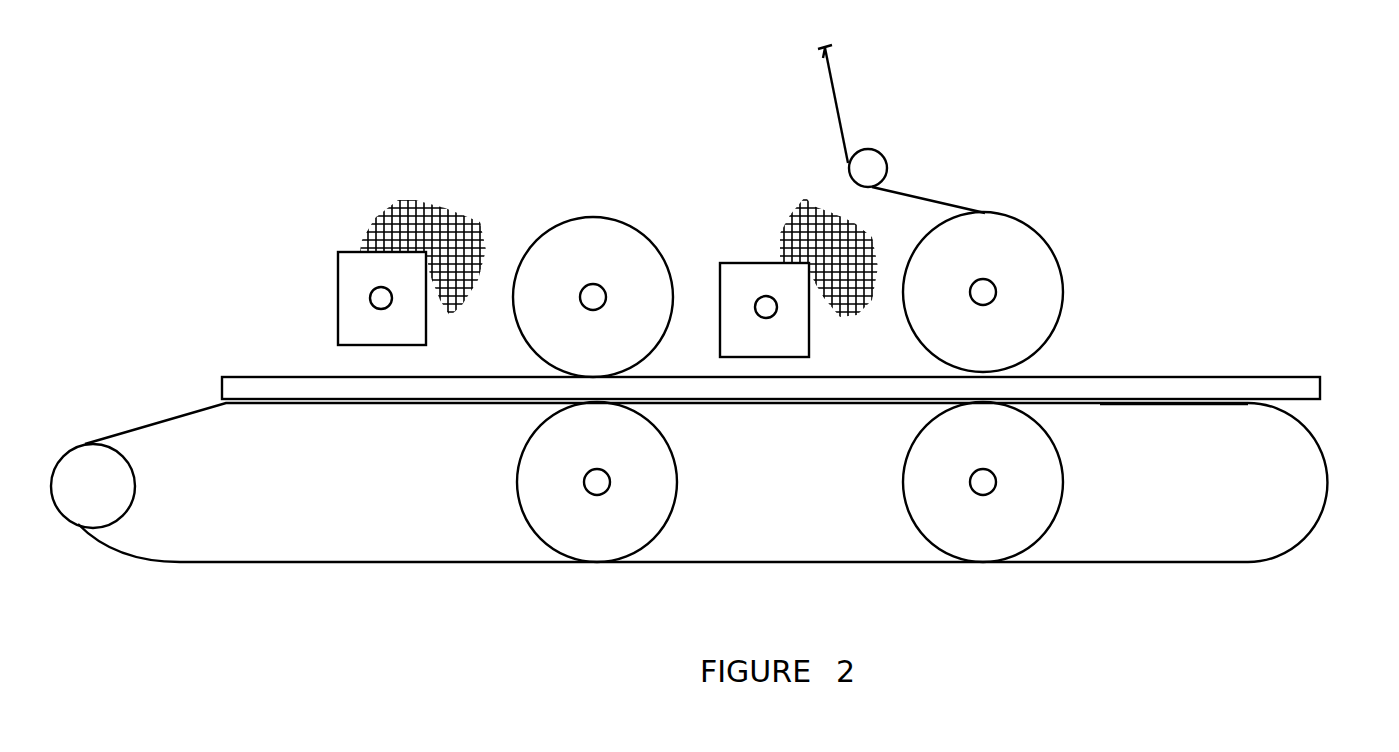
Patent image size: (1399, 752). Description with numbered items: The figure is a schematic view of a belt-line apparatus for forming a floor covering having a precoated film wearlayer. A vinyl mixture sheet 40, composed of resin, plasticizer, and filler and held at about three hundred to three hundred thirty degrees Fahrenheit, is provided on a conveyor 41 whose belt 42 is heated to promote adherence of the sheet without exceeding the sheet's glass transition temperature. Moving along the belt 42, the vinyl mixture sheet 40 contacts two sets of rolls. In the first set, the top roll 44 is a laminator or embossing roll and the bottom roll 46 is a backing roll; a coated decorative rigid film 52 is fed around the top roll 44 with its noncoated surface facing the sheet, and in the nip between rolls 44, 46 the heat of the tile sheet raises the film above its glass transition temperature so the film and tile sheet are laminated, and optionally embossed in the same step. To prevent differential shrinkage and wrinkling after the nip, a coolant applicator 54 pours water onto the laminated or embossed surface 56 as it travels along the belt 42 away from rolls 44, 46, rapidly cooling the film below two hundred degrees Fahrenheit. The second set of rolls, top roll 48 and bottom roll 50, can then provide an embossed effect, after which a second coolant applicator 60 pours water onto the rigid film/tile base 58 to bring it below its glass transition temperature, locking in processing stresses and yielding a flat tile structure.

The vinyl mixture sheet 40 is at (1226, 368).
The conveyor 41 is at (1323, 447).
The belt 42 is at (1252, 410).
The top roll 44 is at (1066, 245).
The bottom roll 46 is at (1064, 523).
The top roll 48 is at (597, 206).
The bottom roll 50 is at (680, 519).
The coated decorative rigid film 52 is at (845, 122).
The coolant applicator 54 is at (753, 243).
The laminated or embossed surface 56 is at (878, 377).
The rigid film/tile base 58 is at (497, 377).
The coolant applicator 60 is at (356, 230).